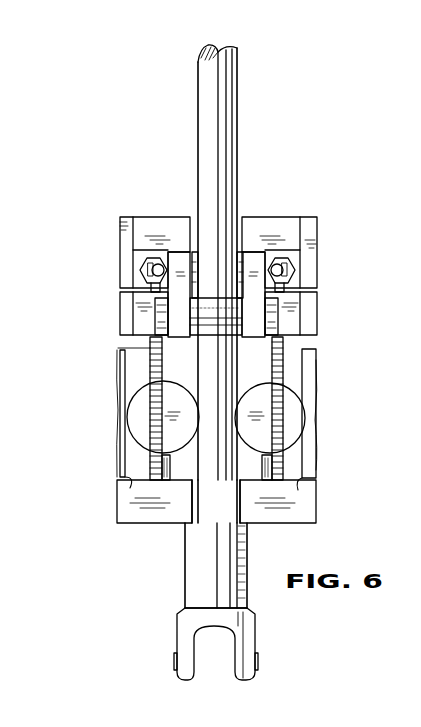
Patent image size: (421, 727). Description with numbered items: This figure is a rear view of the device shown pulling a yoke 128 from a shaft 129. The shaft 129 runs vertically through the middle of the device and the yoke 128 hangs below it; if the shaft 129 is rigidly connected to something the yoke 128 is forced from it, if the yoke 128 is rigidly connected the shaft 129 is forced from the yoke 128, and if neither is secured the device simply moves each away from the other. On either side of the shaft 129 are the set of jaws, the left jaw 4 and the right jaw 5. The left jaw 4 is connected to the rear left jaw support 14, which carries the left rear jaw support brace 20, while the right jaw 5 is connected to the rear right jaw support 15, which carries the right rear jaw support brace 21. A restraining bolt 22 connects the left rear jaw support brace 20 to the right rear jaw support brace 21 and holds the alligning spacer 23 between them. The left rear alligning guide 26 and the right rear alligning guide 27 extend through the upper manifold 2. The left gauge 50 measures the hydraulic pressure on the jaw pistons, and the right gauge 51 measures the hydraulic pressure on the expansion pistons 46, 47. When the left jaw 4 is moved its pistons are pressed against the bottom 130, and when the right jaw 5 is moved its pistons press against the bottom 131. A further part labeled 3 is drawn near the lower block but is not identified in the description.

The shaft 129 is at (198, 72).
The right jaw 5 is at (125, 217).
The rear right jaw support 15 is at (178, 217).
The rear left jaw support 14 is at (270, 217).
The left jaw 4 is at (310, 217).
The right rear jaw support brace 21 is at (120, 250).
The left rear jaw support brace 20 is at (300, 248).
The bottom 131 is at (120, 300).
The bottom 130 is at (317, 300).
The alligning spacer 23 is at (160, 330).
The restraining bolt 22 is at (242, 322).
The right rear alligning guide 27 is at (150, 348).
The left rear alligning guide 26 is at (290, 355).
The upper manifold 2 is at (287, 342).
The right gauge 51 is at (132, 378).
The left gauge 50 is at (300, 380).
The expansion piston 47 is at (128, 482).
The expansion piston 46 is at (300, 484).
The base block 3 is at (150, 528).
The yoke 128 is at (177, 634).